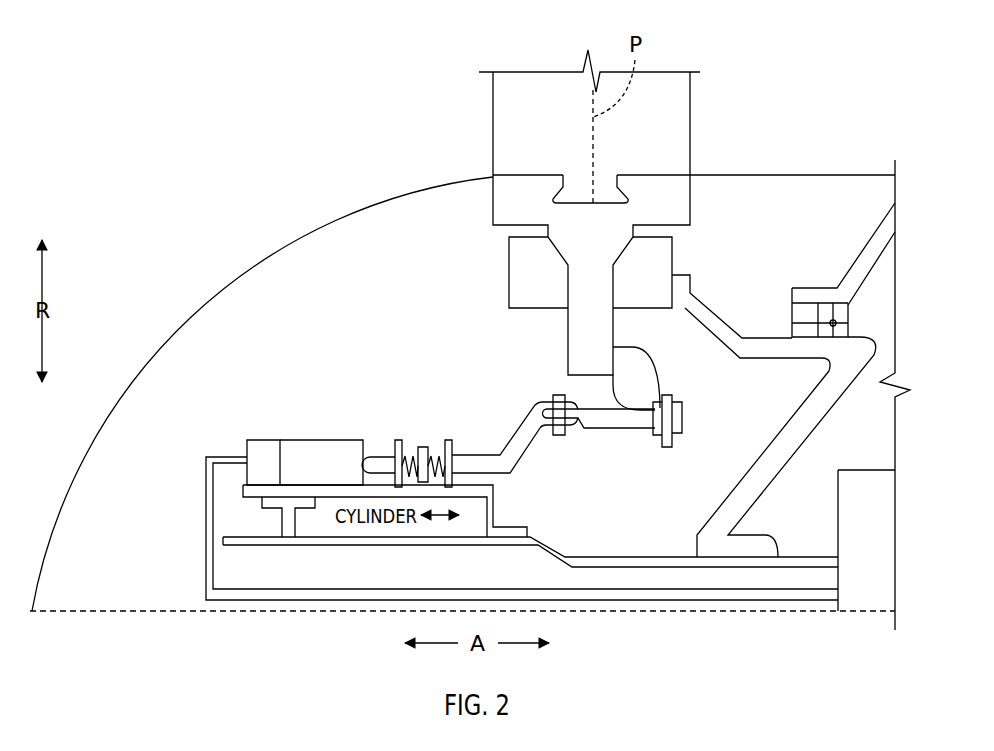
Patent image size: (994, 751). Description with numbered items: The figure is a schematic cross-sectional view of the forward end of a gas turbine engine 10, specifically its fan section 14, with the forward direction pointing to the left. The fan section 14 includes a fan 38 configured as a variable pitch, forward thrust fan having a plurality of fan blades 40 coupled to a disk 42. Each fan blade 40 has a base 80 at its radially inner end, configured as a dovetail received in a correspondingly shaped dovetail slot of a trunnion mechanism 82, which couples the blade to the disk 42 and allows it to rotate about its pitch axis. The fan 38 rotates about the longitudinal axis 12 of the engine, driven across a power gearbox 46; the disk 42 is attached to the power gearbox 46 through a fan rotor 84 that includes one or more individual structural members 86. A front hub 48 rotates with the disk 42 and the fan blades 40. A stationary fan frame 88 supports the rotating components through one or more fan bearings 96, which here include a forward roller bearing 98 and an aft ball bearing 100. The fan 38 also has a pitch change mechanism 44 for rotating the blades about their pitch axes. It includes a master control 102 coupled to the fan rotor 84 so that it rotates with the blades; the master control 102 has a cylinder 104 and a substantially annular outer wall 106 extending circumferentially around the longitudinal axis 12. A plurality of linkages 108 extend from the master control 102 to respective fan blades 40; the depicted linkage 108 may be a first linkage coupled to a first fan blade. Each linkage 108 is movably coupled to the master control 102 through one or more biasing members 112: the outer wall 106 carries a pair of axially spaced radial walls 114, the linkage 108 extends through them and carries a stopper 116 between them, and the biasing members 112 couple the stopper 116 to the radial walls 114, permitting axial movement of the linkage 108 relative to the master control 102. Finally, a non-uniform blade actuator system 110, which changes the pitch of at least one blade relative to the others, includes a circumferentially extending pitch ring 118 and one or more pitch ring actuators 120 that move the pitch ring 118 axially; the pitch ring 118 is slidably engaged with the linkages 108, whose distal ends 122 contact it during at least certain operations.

The gas turbine engine 10 is at (170, 88).
The longitudinal axis 12 is at (117, 613).
The fan section 14 is at (310, 104).
The fan 38 is at (452, 98).
The fan blade 40 is at (667, 88).
The disk 42 is at (660, 255).
The pitch change mechanism 44 is at (358, 302).
The power gearbox 46 is at (878, 510).
The front hub 48 is at (158, 345).
The base 80 is at (578, 190).
The trunnion mechanism 82 is at (570, 247).
The fan rotor 84 is at (864, 429).
The structural member 86 is at (790, 557).
The fan frame 88 is at (857, 260).
The fan bearing 96 is at (864, 309).
The forward roller bearing 98 is at (792, 315).
The aft ball bearing 100 is at (848, 330).
The master control 102 is at (356, 544).
The cylinder 104 is at (417, 530).
The outer wall 106 is at (442, 488).
The linkage 108 is at (596, 442).
The non-uniform blade actuator system 110 is at (301, 404).
The biasing member 112 is at (430, 455).
The radial wall 114 is at (397, 447).
The stopper 116 is at (420, 452).
The pitch ring 118 is at (324, 472).
The pitch ring actuator 120 is at (262, 455).
The distal end 122 is at (352, 462).